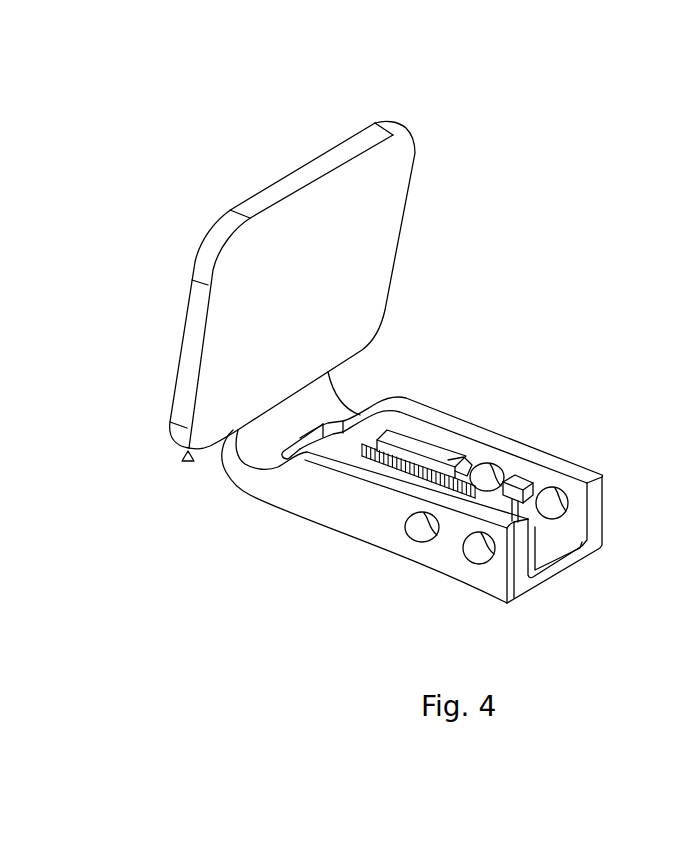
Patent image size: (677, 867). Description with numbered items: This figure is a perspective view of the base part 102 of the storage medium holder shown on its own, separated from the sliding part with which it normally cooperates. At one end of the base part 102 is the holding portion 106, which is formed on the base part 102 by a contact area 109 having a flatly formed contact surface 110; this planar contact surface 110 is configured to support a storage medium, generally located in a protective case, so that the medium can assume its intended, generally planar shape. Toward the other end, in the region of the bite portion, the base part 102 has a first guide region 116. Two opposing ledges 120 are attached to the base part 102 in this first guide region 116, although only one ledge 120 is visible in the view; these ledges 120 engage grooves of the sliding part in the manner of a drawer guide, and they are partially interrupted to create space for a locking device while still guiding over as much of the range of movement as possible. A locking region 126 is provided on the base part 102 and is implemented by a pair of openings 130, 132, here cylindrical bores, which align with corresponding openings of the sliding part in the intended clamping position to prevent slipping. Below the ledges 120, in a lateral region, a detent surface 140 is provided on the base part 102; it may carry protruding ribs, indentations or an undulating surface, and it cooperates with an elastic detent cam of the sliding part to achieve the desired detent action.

The base part 102 is at (527, 78).
The holding portion 106 is at (178, 208).
The contact area 109 is at (188, 461).
The contact surface 110 is at (395, 200).
The first guide region 116 is at (580, 527).
The ledge 120 is at (403, 453).
The locking region 126 is at (452, 635).
The opening 130 is at (420, 533).
The opening 132 is at (485, 558).
The detent surface 140 is at (473, 475).